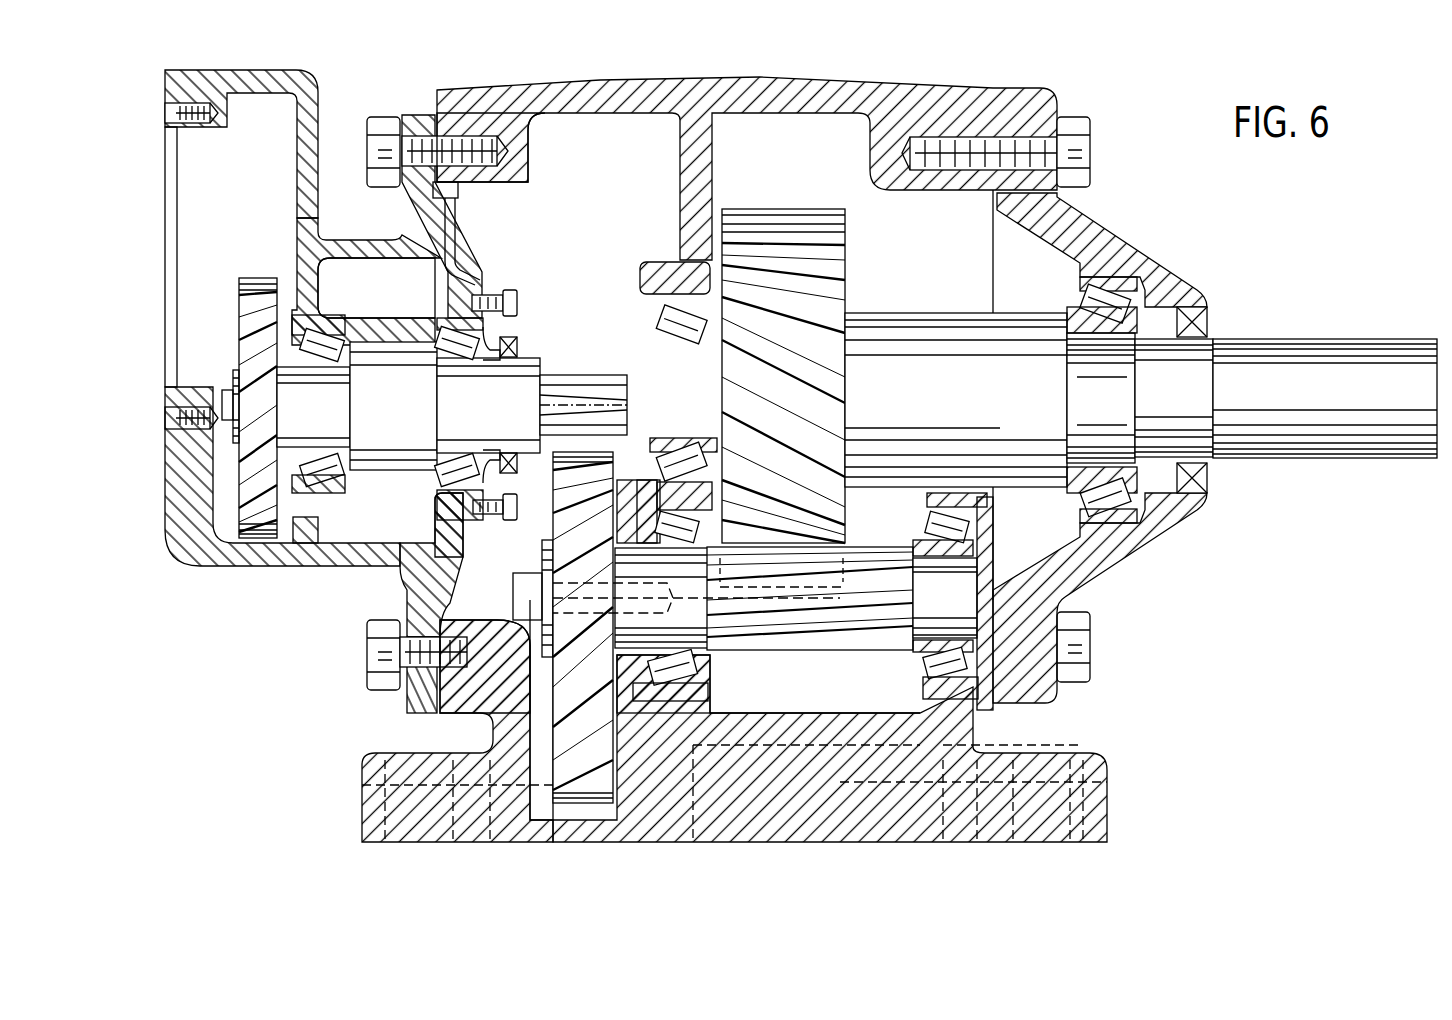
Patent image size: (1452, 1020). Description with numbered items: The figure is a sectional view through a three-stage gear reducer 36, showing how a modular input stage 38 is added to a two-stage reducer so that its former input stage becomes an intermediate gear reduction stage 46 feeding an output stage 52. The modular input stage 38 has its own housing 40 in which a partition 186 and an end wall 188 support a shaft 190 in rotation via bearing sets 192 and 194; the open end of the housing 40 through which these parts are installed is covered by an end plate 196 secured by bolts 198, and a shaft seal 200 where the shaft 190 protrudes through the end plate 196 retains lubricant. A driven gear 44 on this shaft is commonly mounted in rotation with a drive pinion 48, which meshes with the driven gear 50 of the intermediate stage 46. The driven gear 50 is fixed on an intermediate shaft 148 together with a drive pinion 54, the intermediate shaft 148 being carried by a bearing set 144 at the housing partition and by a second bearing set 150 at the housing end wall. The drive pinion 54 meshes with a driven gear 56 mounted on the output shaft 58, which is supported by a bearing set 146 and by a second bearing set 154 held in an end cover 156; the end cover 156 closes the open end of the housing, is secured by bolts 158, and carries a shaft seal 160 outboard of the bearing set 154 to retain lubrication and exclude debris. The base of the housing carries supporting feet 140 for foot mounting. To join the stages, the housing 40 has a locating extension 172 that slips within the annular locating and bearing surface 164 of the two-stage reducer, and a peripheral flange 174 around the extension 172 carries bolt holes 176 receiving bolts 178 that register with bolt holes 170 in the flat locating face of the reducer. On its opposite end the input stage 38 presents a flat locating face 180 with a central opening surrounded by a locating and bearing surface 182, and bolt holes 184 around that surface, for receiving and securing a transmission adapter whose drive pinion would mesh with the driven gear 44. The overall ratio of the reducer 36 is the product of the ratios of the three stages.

The three-stage gear reducer 36 is at (900, 70).
The modular input stage 38 is at (230, 578).
The housing 40 is at (192, 550).
The driven gear 44 is at (262, 278).
The intermediate gear reduction stage 46 is at (540, 807).
The drive pinion 48 is at (590, 375).
The driven gear 50 is at (590, 800).
The output stage 52 is at (773, 700).
The drive pinion 54 is at (845, 637).
The driven gear 56 is at (855, 250).
The output shaft 58 is at (1335, 340).
The supporting feet 140 is at (370, 757).
The bearing set 144 is at (705, 682).
The bearing set 146 is at (678, 310).
The intermediate shaft 148 is at (653, 700).
The second bearing set 150 is at (950, 683).
The second bearing set 154 is at (1120, 270).
The end cover 156 is at (1105, 240).
The bolts 158 is at (1080, 135).
The shaft seal 160 is at (1207, 300).
The annular locating and bearing surface 164 is at (457, 225).
The bolt holes 170 is at (472, 120).
The locating extension 172 is at (460, 195).
The peripheral flange 174 is at (437, 108).
The bolt holes 176 is at (413, 124).
The bolts 178 is at (378, 175).
The flat locating face 180 is at (166, 74).
The locating and bearing surface 182 is at (170, 207).
The bolt holes 184 is at (167, 112).
The partition 186 is at (343, 285).
The end wall 188 is at (475, 300).
The shaft 190 is at (378, 470).
The bearing set 192 is at (322, 492).
The bearing set 194 is at (463, 530).
The end plate 196 is at (517, 335).
The bolts 198 is at (517, 300).
The shaft seal 200 is at (500, 357).